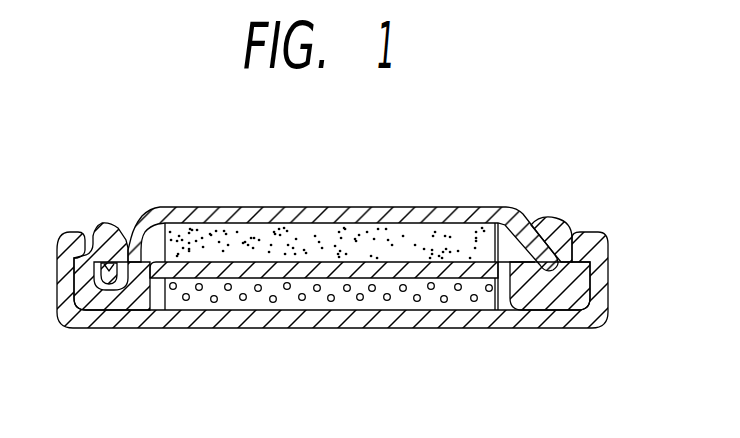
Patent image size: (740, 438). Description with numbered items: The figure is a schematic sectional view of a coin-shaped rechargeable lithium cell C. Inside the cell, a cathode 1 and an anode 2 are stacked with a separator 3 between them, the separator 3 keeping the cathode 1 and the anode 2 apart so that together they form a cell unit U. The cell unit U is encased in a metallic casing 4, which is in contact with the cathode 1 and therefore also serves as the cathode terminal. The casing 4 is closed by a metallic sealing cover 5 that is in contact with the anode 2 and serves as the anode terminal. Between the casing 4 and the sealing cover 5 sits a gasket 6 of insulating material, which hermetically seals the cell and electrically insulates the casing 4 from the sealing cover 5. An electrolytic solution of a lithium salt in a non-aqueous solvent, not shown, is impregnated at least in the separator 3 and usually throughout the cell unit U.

The cathode 1 is at (318, 306).
The anode 2 is at (257, 222).
The separator 3 is at (298, 268).
The metallic casing 4 is at (596, 313).
The metallic sealing cover 5 is at (197, 214).
The gasket 6 is at (556, 228).
The cell unit U is at (511, 246).
The rechargeable lithium cell C is at (668, 279).